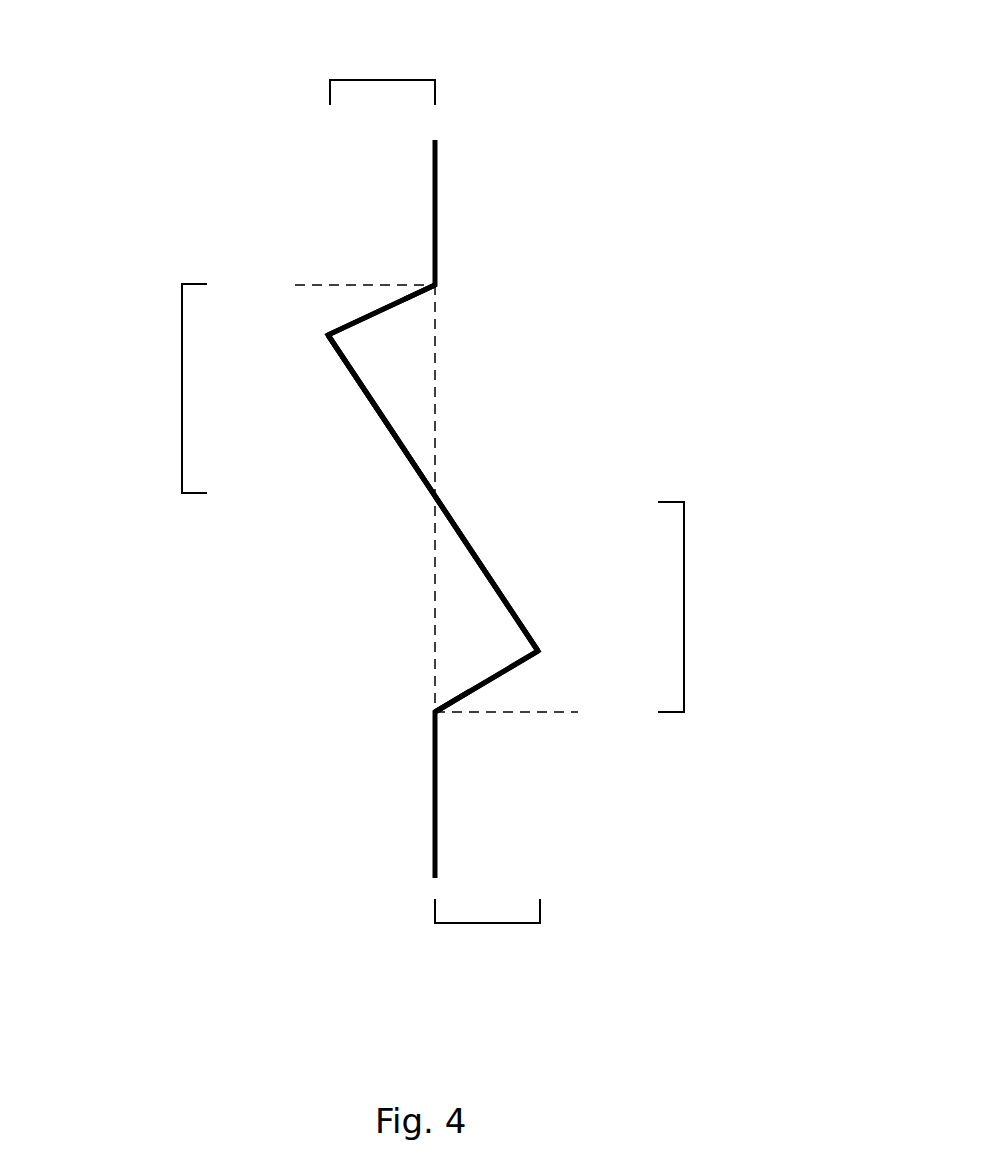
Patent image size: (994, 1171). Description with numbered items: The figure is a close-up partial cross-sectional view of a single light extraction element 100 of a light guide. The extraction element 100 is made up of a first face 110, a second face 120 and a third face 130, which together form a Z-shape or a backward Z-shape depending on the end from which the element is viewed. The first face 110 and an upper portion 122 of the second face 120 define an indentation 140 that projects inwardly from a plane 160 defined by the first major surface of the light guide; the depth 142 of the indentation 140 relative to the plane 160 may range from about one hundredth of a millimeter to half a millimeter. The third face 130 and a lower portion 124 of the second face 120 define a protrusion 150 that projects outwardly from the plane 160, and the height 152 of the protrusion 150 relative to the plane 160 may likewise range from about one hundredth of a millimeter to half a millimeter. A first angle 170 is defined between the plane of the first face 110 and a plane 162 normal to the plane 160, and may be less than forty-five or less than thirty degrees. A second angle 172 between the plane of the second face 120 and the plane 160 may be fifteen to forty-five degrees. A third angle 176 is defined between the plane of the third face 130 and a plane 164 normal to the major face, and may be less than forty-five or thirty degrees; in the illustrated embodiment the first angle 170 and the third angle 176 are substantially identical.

The extraction element 100 is at (570, 509).
The first face 110 is at (445, 268).
The second face 120 is at (470, 491).
The third face 130 is at (538, 719).
The upper portion 122 is at (370, 386).
The lower portion 124 is at (488, 567).
The indentation 140 is at (182, 387).
The depth 142 is at (383, 80).
The protrusion 150 is at (684, 580).
The height 152 is at (470, 923).
The plane 160 is at (435, 615).
The plane 162 is at (335, 283).
The plane 164 is at (555, 712).
The first angle 170 is at (394, 290).
The second angle 172 is at (412, 446).
The third angle 176 is at (472, 710).